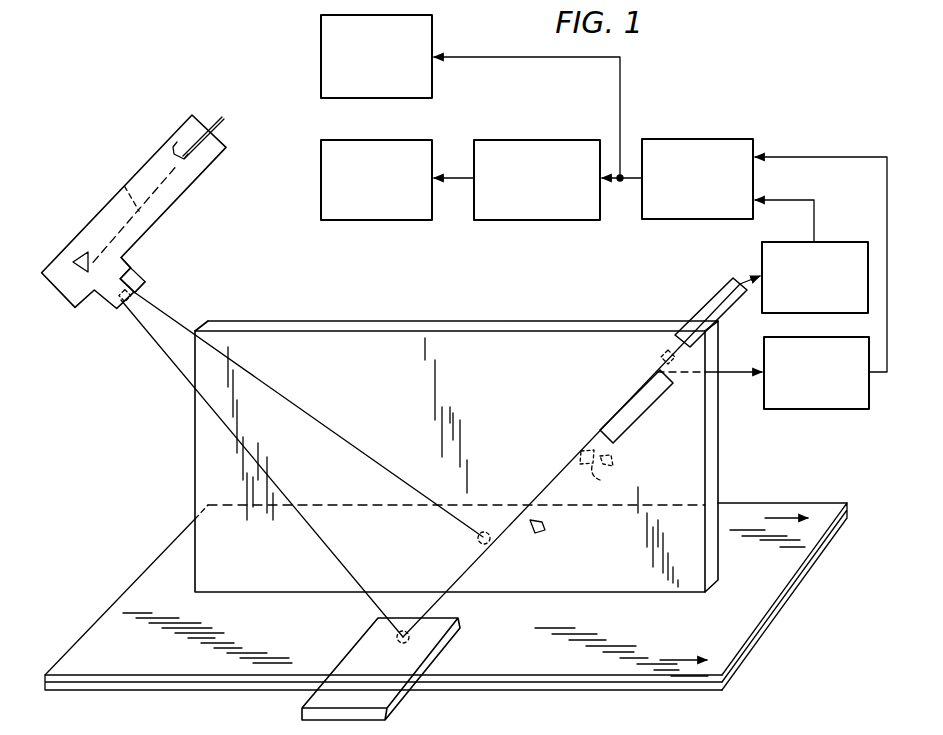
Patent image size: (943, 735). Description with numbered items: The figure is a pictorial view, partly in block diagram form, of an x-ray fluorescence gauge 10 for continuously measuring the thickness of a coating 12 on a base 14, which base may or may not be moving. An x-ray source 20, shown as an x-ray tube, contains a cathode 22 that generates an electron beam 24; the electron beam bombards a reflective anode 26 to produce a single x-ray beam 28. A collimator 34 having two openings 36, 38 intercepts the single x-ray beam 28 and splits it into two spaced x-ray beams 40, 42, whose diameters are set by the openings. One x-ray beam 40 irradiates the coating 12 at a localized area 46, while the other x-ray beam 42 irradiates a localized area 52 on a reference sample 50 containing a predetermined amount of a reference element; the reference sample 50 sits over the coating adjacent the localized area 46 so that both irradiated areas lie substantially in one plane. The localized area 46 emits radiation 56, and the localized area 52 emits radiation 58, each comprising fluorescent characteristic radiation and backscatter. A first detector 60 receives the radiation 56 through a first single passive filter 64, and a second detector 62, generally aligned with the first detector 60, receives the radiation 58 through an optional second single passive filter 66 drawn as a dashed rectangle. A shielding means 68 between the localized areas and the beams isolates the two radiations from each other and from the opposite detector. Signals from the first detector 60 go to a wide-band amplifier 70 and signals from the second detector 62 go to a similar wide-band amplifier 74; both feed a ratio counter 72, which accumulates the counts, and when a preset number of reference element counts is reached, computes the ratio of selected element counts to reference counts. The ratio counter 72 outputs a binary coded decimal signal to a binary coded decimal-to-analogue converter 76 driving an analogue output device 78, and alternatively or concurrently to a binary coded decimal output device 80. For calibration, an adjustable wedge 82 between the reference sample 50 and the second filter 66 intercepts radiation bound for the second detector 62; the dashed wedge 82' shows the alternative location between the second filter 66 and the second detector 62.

The x-ray fluorescence gauge 10 is at (376, 306).
The coating 12 is at (850, 502).
The base 14 is at (724, 688).
The x-ray source 20 is at (141, 161).
The cathode 22 is at (222, 121).
The electron beam 24 is at (124, 192).
The reflective anode 26 is at (80, 262).
The single x-ray beam 28 is at (131, 270).
The collimator 34 is at (146, 282).
The collimator opening 36 is at (146, 284).
The collimator opening 38 is at (121, 305).
The x-ray beam 40 is at (181, 325).
The x-ray beam 42 is at (172, 364).
The localized area 46 is at (477, 538).
The reference sample 50 is at (363, 642).
The localized area 52 is at (405, 646).
The radiation 56 is at (579, 450).
The radiation 58 is at (488, 553).
The first detector 60 is at (718, 302).
The second detector 62 is at (644, 412).
The first single passive filter 64 is at (661, 355).
The second single passive filter 66 is at (609, 483).
The shielding means 68 is at (548, 328).
The wide-band amplifier 70 is at (822, 242).
The ratio counter 72 is at (678, 138).
The wide-band amplifier 74 is at (795, 410).
The binary coded decimal-to-analogue converter 76 is at (545, 140).
The analogue output device 78 is at (321, 178).
The binary coded decimal output device 80 is at (321, 42).
The adjustable wedge 82 is at (563, 527).
The dashed wedge 82' is at (634, 462).